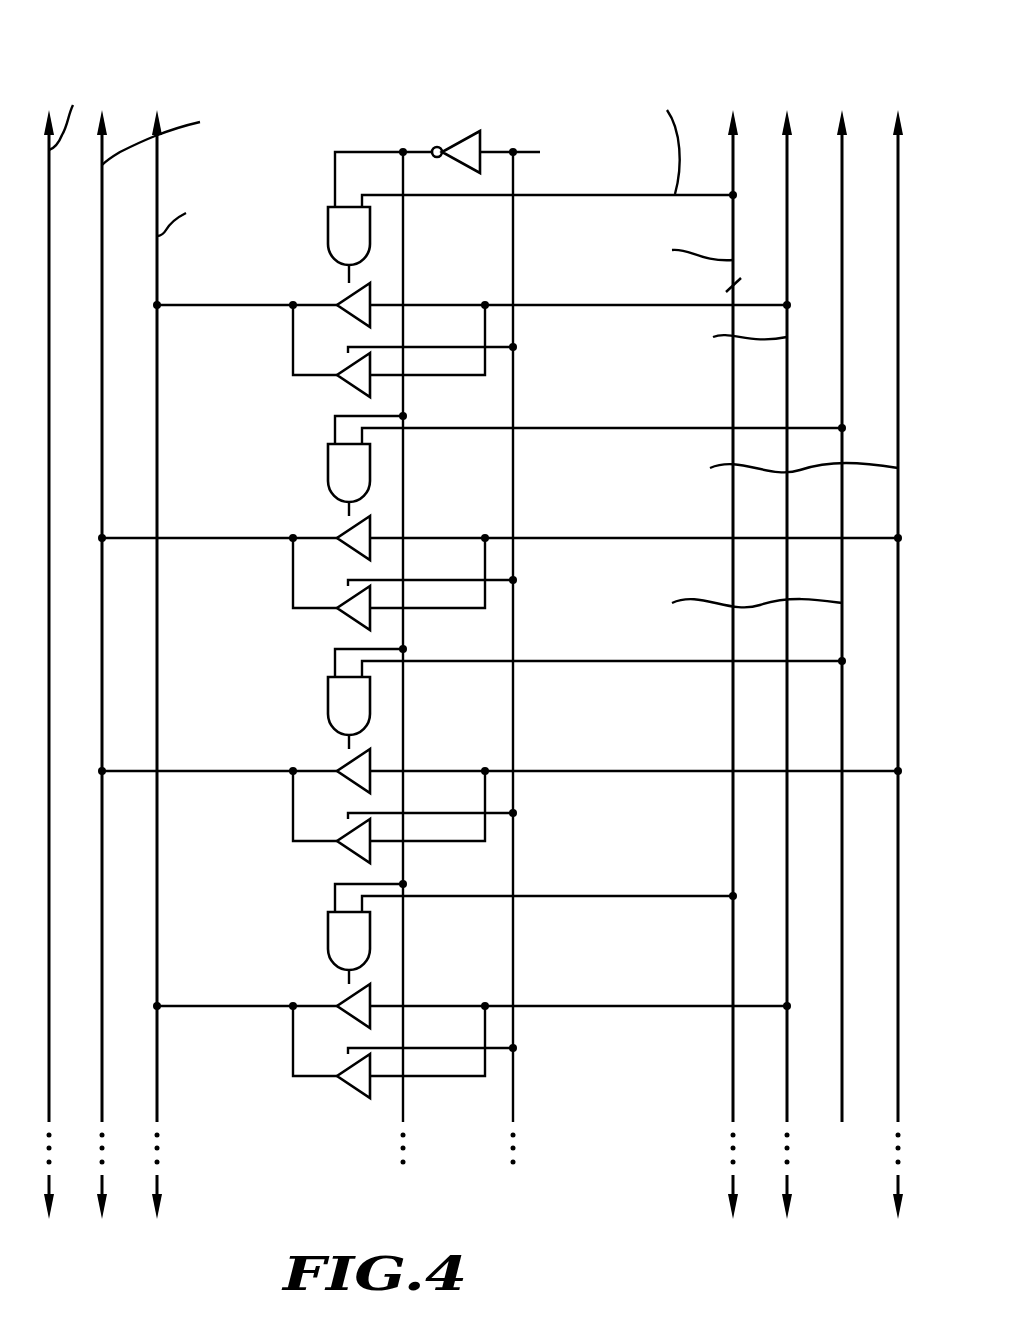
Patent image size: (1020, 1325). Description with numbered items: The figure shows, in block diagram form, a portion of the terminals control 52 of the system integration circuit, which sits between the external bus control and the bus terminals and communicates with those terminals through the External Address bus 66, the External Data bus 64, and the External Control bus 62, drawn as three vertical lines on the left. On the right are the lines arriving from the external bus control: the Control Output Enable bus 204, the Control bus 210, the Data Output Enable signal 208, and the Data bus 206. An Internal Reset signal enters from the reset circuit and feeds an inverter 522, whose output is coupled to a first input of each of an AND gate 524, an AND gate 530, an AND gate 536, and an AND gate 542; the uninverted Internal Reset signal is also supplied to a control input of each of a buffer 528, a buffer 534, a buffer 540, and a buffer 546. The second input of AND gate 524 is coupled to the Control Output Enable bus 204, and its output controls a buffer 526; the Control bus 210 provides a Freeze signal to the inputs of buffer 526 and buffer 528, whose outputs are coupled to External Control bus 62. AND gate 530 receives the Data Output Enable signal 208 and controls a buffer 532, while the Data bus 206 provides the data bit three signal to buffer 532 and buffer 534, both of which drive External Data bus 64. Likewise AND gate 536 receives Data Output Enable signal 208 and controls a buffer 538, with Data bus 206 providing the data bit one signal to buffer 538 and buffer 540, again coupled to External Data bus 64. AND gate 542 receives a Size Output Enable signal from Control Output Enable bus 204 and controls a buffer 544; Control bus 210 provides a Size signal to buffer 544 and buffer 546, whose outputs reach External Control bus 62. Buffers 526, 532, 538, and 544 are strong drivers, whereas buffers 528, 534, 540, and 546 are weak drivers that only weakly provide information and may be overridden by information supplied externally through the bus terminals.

The terminals control 52 is at (303, 31).
The External Control bus 62 is at (157, 390).
The External Data bus 64 is at (102, 390).
The External Address bus 66 is at (49, 390).
The Control Output Enable bus 204 is at (733, 170).
The Data bus 206 is at (898, 170).
The Data Output Enable signal 208 is at (842, 170).
The Control bus 210 is at (787, 170).
The inverter 522 is at (463, 140).
The AND gate 524 is at (328, 240).
The buffer 526 is at (351, 322).
The buffer 528 is at (346, 388).
The AND gate 530 is at (328, 470).
The buffer 532 is at (353, 556).
The buffer 534 is at (348, 620).
The AND gate 536 is at (328, 702).
The buffer 538 is at (353, 790).
The buffer 540 is at (346, 852).
The AND gate 542 is at (328, 936).
The buffer 544 is at (353, 1028).
The buffer 546 is at (353, 1100).